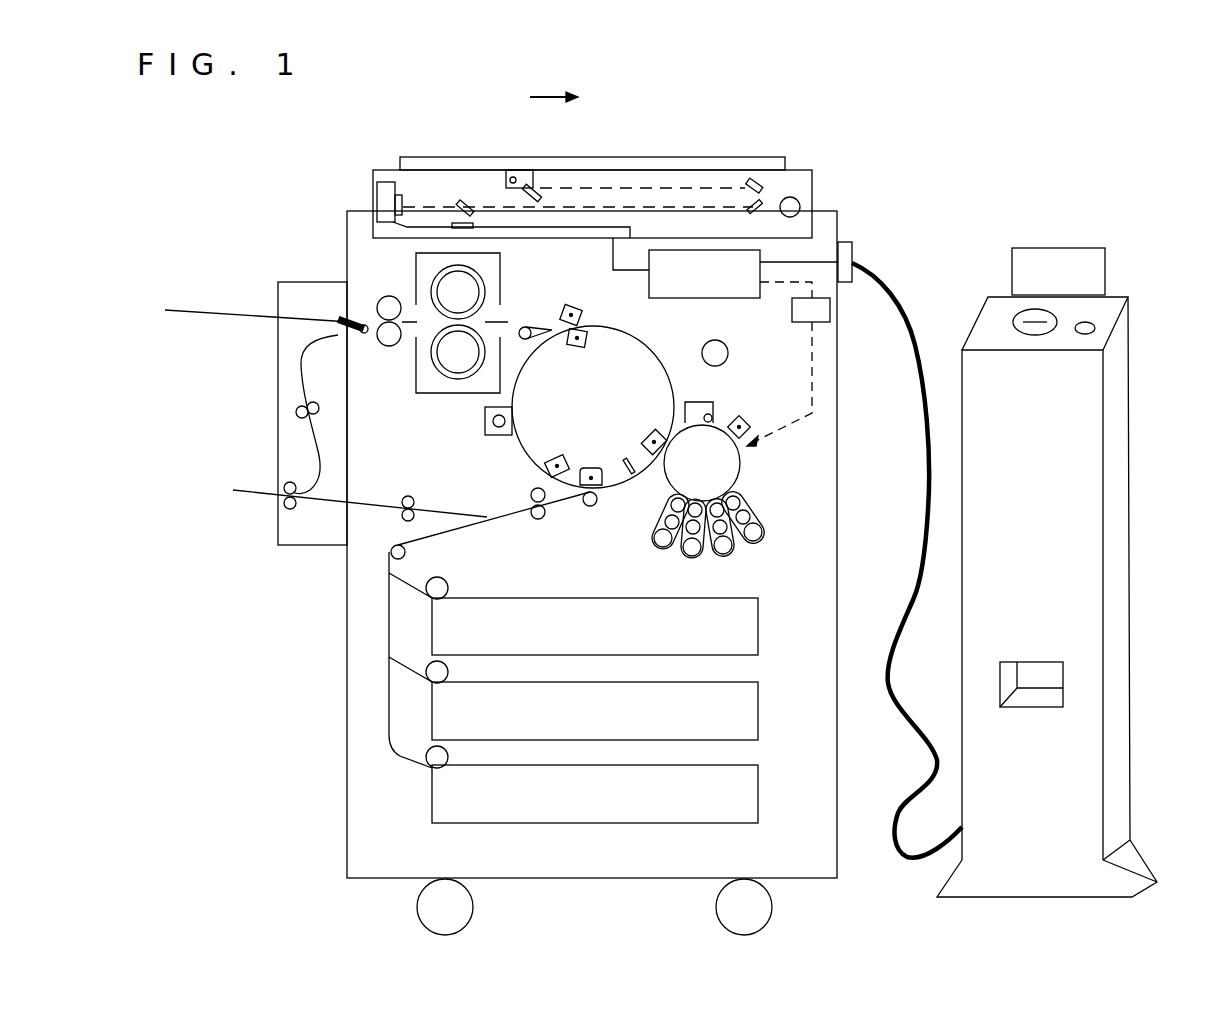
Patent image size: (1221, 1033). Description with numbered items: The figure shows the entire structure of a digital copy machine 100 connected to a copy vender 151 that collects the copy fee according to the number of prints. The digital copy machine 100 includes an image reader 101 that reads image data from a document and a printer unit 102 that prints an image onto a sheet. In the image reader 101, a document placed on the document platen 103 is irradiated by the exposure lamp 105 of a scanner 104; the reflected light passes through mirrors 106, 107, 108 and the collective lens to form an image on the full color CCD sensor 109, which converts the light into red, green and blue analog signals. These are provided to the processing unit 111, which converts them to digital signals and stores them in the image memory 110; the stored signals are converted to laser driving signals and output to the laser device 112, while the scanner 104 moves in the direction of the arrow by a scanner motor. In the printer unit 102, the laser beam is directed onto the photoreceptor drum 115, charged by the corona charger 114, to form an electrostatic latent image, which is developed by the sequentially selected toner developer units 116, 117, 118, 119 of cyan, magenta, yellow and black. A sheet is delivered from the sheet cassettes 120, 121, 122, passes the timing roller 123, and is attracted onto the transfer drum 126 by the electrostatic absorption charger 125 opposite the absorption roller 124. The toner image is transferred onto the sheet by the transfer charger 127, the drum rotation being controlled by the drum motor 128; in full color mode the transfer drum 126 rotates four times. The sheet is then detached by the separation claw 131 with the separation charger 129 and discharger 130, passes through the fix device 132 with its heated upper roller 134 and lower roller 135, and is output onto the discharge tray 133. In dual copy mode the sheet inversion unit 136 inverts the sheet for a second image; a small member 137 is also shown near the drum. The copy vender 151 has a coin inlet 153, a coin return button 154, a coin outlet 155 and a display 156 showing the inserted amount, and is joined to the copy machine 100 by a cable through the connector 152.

The digital copy machine 100 is at (292, 187).
The image reader 101 is at (807, 181).
The printer unit 102 is at (823, 477).
The document platen 103 is at (622, 160).
The scanner 104 is at (530, 185).
The exposure lamp 105 is at (513, 172).
The mirror 106 is at (758, 178).
The mirror 107 is at (746, 212).
The mirror 108 is at (462, 203).
The full color CCD sensor 109 is at (455, 222).
The image memory 110 is at (577, 238).
The processing unit 111 is at (725, 342).
The laser device 112 is at (803, 206).
The corona charger 114 is at (731, 414).
The photoreceptor drum 115 is at (702, 463).
The toner developer unit 116 is at (762, 520).
The toner developer unit 117 is at (734, 541).
The toner developer unit 118 is at (688, 543).
The toner developer unit 119 is at (655, 534).
The sheet cassette 120 is at (592, 616).
The sheet cassette 121 is at (592, 700).
The sheet cassette 122 is at (592, 784).
The timing roller 123 is at (543, 520).
The absorption roller 124 is at (595, 515).
The electrostatic absorption charger 125 is at (595, 464).
The transfer drum 126 is at (593, 407).
The transfer charger 127 is at (655, 428).
The drum motor 128 is at (728, 355).
The separation charger 129 is at (570, 314).
The discharger 130 is at (555, 453).
The separation claw 131 is at (531, 318).
The fix device 132 is at (423, 288).
The discharge tray 133 is at (203, 312).
The upper roller 134 is at (458, 292).
The lower roller 135 is at (458, 352).
The sheet inversion unit 136 is at (295, 398).
The cleaning blade 137 is at (627, 460).
The copy vender 151 is at (1030, 220).
The connector 152 is at (853, 247).
The coin inlet 153 is at (1033, 337).
The coin return button 154 is at (1095, 327).
The coin outlet 155 is at (1035, 698).
The display 156 is at (1070, 248).